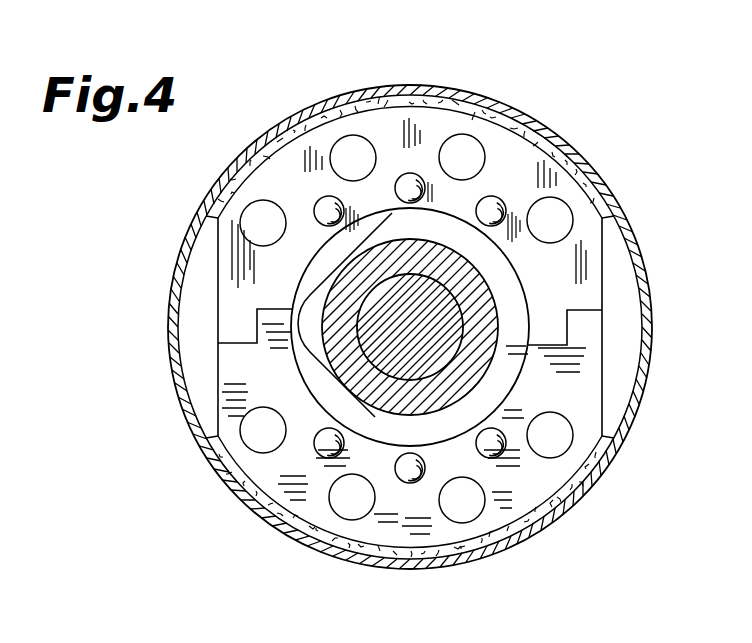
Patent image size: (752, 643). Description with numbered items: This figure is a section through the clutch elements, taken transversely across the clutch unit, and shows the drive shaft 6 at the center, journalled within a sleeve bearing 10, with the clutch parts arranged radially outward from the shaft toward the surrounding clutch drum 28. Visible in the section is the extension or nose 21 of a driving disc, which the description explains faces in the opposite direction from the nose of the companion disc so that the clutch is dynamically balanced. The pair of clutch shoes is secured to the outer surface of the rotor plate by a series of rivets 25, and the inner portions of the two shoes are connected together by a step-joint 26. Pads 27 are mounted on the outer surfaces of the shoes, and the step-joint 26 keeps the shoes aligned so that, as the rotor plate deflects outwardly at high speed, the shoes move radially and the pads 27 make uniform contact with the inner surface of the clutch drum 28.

The drive shaft 6 is at (432, 313).
The sleeve bearing 10 is at (345, 373).
The extension or nose 21 is at (307, 332).
The rivets 25 is at (410, 203).
The step-joint 26 is at (258, 310).
The pads 27 is at (516, 126).
The clutch drum 28 is at (371, 88).